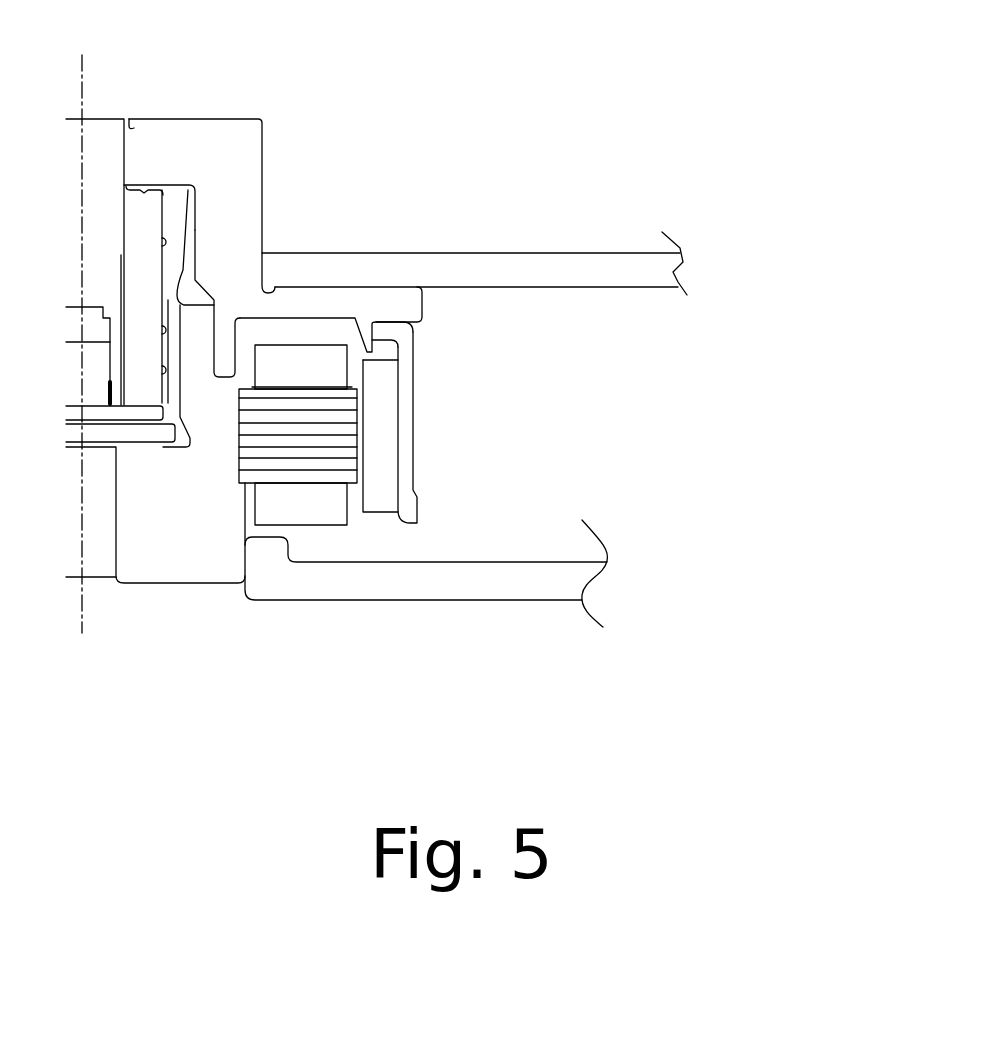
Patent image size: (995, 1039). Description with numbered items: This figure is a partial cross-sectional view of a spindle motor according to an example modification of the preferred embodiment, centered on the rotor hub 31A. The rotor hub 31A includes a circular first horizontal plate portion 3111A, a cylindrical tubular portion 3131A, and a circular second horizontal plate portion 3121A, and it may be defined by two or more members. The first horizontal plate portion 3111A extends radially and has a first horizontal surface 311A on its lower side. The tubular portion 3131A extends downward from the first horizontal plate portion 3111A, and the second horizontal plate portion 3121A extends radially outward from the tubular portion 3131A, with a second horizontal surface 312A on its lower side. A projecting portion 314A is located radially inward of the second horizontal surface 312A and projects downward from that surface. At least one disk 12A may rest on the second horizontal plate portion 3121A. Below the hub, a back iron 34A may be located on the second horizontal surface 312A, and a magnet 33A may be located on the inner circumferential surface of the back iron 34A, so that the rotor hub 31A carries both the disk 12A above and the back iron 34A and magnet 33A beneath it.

The rotor hub 31A is at (300, 243).
The first horizontal surface 311A is at (148, 183).
The first horizontal plate portion 3111A is at (187, 173).
The tubular portion 3131A is at (220, 212).
The second horizontal surface 312A is at (297, 318).
The second horizontal plate portion 3121A is at (572, 275).
The disk 12A is at (335, 307).
The projecting portion 314A is at (223, 348).
The back iron 34A is at (405, 438).
The magnet 33A is at (380, 478).